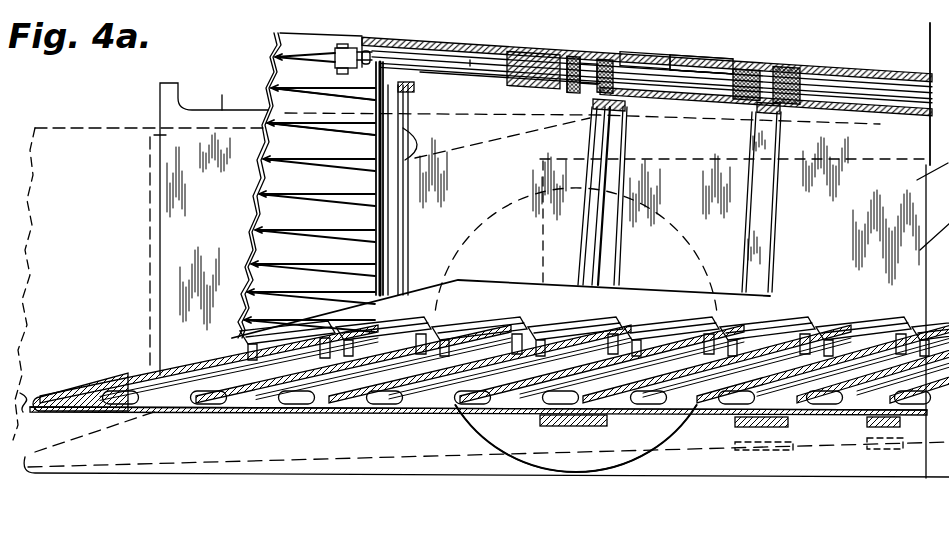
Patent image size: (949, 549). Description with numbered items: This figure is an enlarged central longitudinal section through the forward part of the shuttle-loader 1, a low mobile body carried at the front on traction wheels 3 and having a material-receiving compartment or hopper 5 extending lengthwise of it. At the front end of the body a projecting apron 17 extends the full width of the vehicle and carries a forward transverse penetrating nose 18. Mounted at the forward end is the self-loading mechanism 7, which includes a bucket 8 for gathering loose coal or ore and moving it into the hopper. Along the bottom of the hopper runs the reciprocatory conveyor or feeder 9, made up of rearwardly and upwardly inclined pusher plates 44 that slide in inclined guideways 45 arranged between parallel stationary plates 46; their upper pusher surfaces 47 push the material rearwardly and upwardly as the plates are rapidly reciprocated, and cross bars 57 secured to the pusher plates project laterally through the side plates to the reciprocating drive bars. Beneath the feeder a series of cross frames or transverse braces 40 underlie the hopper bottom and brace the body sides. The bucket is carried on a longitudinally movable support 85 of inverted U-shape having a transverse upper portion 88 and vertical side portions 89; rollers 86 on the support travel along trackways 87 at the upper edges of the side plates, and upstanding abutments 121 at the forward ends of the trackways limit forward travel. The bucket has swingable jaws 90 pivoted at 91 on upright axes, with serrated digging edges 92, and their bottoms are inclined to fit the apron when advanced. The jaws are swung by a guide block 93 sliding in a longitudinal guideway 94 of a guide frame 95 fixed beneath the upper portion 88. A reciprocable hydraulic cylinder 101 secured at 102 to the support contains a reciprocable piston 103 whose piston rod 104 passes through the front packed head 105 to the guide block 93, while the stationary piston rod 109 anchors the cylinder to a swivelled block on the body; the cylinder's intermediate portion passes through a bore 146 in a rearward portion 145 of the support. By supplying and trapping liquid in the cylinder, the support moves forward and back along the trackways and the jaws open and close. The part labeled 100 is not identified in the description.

The shuttle-loader 1 is at (695, 47).
The front traction wheels 3 is at (660, 446).
The material-receiving compartment or hopper 5 is at (470, 70).
The self-loading mechanism 7 is at (264, 51).
The bucket 8 is at (317, 32).
The reciprocatory conveyor or feeder 9 is at (777, 337).
The projecting apron 17 is at (75, 390).
The penetrating nose 18 is at (16, 394).
The cross frames or transverse braces 40 is at (583, 427).
The pusher bars or plates 44 is at (283, 375).
The inclined guideways 45 is at (368, 384).
The parallel stationary plates 46 is at (503, 318).
The upper pusher surfaces 47 is at (632, 311).
The cross bars 57 is at (480, 414).
The bucket support 85 is at (588, 50).
The rollers 86 is at (682, 62).
The trackways 87 is at (222, 104).
The transverse upper portion 88 is at (448, 41).
The vertical side portions 89 is at (737, 213).
The bucket jaws 90 is at (261, 80).
The jaw pivots 91 is at (449, 70).
The serrated digging edges 92 is at (262, 130).
The guide block 93 is at (526, 82).
The longitudinal guideway 94 is at (497, 43).
The guide frame 95 is at (357, 46).
The sleeve 100 is at (536, 95).
The hydraulic cylinder 101 is at (853, 82).
The cylinder securement 102 is at (621, 53).
The reciprocable piston 103 is at (749, 72).
The piston rod 104 is at (700, 90).
The front packed head 105 is at (627, 124).
The stationary piston rod 109 is at (877, 93).
The abutments or stops 121 is at (170, 88).
The rearward portion of bucket support 145 is at (780, 112).
The bore 146 is at (760, 98).